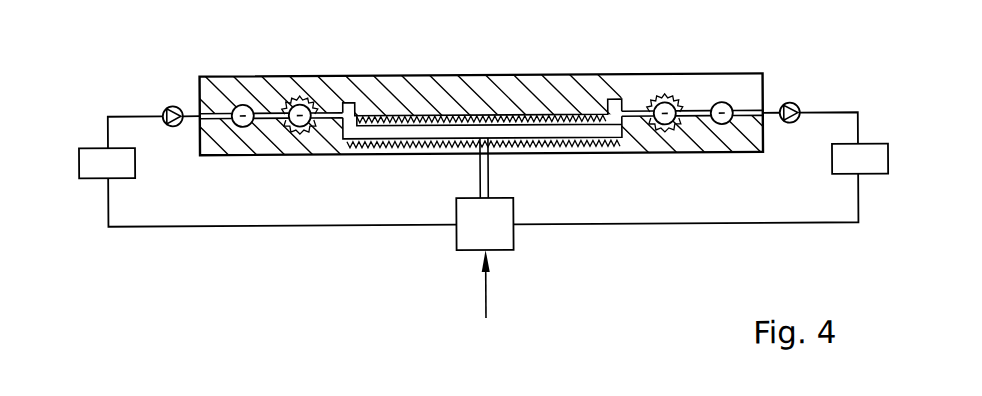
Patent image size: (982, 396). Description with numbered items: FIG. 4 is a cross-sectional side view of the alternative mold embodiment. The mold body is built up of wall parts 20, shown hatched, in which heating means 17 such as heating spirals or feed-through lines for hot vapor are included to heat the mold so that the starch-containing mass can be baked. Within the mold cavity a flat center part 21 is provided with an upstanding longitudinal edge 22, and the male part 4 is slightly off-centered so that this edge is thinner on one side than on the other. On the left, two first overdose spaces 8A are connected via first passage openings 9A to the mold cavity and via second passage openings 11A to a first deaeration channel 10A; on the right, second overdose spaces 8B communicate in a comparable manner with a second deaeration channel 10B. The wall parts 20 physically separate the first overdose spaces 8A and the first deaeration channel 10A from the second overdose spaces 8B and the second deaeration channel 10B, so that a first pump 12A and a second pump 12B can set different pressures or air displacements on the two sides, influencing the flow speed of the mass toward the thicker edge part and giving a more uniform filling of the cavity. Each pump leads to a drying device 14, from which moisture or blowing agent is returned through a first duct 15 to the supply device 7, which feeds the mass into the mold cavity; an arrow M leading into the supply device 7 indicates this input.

The male part 4 is at (545, 150).
The supply device 7 is at (463, 236).
The first overdose spaces 8A is at (300, 110).
The second overdose spaces 8B is at (665, 110).
The first passage openings 9A is at (328, 120).
The first deaeration channel 10A is at (243, 110).
The second deaeration channel 10B is at (722, 110).
The second passage openings 11A is at (272, 119).
The first pump 12A is at (165, 107).
The second pump 12B is at (799, 106).
The drying device 14 is at (98, 170).
The first duct 15 is at (202, 226).
The heating means 17 is at (403, 116).
The wall parts 20 is at (695, 122).
The flat center part 21 is at (580, 140).
The upstanding longitudinal edge 22 is at (349, 104).
The drive motor / actuation signal M is at (485, 307).